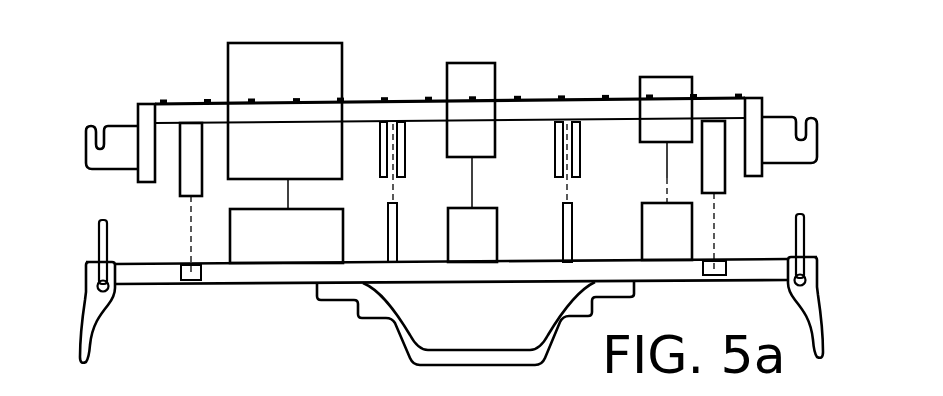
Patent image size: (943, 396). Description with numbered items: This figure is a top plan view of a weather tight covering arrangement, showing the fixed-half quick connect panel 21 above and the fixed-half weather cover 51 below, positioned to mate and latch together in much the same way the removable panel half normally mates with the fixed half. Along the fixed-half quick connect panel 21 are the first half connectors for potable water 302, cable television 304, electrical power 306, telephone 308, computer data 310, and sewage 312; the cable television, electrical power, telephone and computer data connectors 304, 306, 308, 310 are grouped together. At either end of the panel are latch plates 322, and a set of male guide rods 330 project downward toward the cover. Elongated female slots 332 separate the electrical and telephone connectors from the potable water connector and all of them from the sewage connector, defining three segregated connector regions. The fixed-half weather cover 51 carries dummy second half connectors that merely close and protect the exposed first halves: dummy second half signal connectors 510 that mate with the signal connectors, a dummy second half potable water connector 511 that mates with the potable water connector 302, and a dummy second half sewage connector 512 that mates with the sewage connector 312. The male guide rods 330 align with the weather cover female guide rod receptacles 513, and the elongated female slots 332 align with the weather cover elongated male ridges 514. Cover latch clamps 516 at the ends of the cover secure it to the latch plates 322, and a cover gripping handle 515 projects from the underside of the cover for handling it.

The fixed-half quick connect panel 21 is at (173, 90).
The fixed-half weather cover 51 is at (233, 297).
The potable water connector 302 is at (293, 155).
The cable television connector 304 is at (745, 113).
The electrical power connector 306 is at (745, 113).
The telephone connector 308 is at (745, 113).
The computer data connector 310 is at (667, 132).
The sewage connector 312 is at (477, 140).
The latch plates 322 is at (121, 152).
The male guide rods 330 is at (192, 170).
The elongated female slots 332 is at (407, 122).
The dummy second half signal connectors 510 is at (663, 232).
The dummy second half potable water connector 511 is at (464, 233).
The dummy second half sewage connector 512 is at (290, 232).
The weather cover female guide rod receptacles 513 is at (190, 268).
The weather cover elongated male ridges 514 is at (400, 223).
The cover gripping handles 515 is at (415, 333).
The cover latch clamps 516 is at (92, 298).